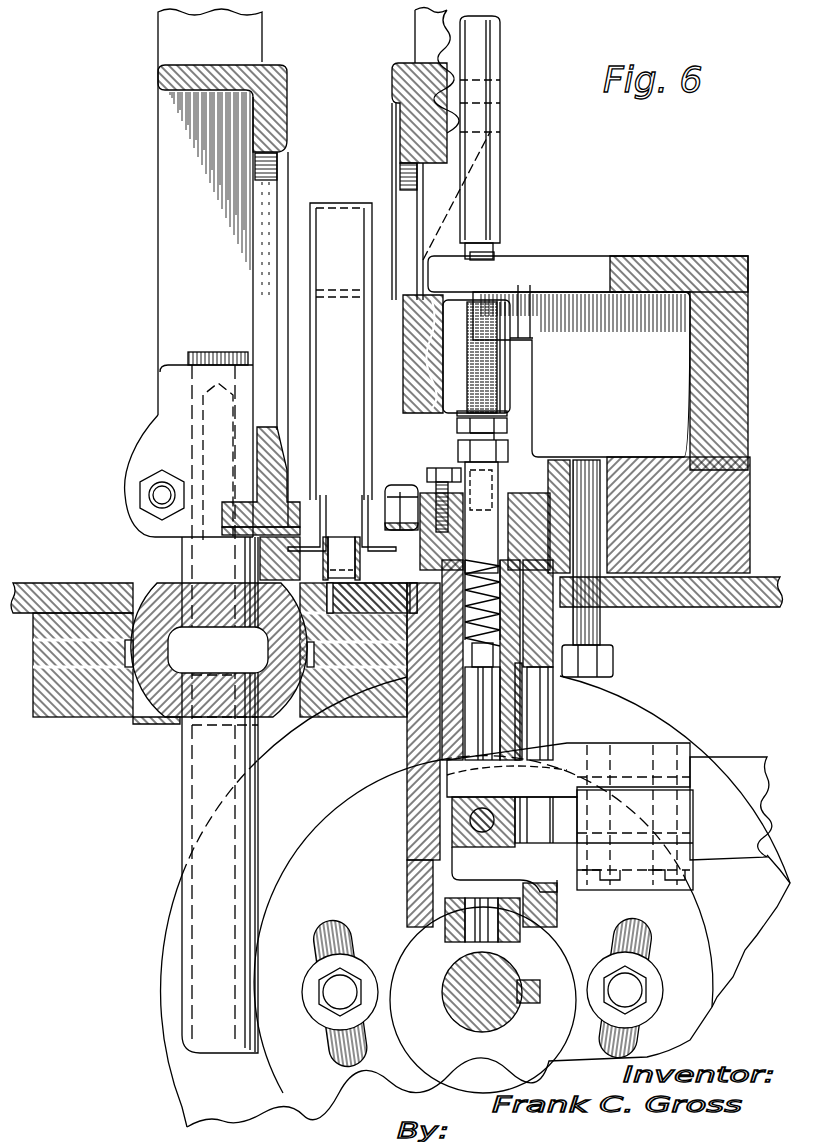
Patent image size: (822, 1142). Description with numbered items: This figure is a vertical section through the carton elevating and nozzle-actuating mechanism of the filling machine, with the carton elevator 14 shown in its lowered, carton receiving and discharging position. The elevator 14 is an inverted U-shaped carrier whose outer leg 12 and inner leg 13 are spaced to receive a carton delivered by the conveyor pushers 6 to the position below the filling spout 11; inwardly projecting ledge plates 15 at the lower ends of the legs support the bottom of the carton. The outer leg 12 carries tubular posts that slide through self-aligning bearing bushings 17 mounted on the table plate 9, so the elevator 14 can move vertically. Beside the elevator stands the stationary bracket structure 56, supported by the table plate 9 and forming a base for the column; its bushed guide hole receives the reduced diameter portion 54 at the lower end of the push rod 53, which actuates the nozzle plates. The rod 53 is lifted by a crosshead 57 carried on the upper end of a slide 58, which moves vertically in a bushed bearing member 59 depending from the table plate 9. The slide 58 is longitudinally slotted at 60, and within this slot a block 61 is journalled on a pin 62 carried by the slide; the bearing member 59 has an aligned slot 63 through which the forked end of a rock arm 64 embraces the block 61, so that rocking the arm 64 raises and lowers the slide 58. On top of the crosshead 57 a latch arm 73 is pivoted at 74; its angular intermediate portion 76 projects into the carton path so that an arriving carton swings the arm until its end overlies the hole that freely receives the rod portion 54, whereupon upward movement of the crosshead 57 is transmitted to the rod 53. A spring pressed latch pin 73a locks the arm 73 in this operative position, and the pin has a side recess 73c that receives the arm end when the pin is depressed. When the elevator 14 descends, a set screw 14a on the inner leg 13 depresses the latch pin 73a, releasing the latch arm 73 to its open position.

The pushers 6 is at (336, 215).
The table plate 9 is at (48, 582).
The filling spout 11 is at (342, 552).
The outer leg 12 is at (180, 257).
The inner leg 13 is at (264, 180).
The carton elevator 14 is at (148, 68).
The set screw 14a is at (508, 431).
The ledge plates 15 is at (305, 532).
The self-aligning bearing bushings 17 is at (160, 582).
The push rod 53 is at (490, 177).
The reduced diameter portion 54 is at (485, 255).
The bracket structure 56 is at (585, 272).
The crosshead 57 is at (565, 462).
The slide 58 is at (465, 738).
The bearing member 59 is at (438, 758).
The slot 60 is at (440, 882).
The block 61 is at (450, 840).
The pin 62 is at (470, 820).
The slot 63 is at (543, 703).
The rock arm 64 is at (737, 768).
The latch arm 73 is at (392, 480).
The latch pin 73a is at (508, 470).
The recess 73c is at (510, 448).
The pivot 74 is at (447, 470).
The intermediate portion 76 is at (393, 497).